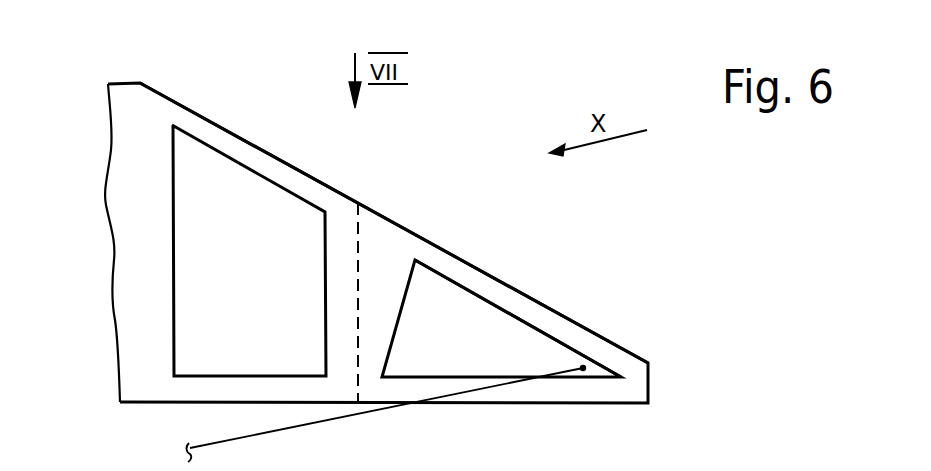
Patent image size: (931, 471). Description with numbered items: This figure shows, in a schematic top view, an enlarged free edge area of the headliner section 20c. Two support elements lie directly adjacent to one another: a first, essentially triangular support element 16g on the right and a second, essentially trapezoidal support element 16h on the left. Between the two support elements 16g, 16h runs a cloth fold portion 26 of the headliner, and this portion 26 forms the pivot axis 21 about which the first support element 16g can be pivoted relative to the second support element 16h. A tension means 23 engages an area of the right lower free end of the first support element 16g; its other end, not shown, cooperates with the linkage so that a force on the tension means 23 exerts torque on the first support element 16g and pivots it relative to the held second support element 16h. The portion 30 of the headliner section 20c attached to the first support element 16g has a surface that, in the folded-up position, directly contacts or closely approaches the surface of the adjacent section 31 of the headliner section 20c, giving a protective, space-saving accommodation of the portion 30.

The headliner section 20c is at (165, 108).
The adjacent section of the headliner 31 is at (227, 142).
The second support element 16h is at (252, 217).
The pivot axis 21 is at (362, 243).
The cloth fold portion 26 is at (393, 263).
The first support element 16g is at (483, 333).
The portion of the headliner 30 is at (595, 347).
The tension means 23 is at (393, 404).